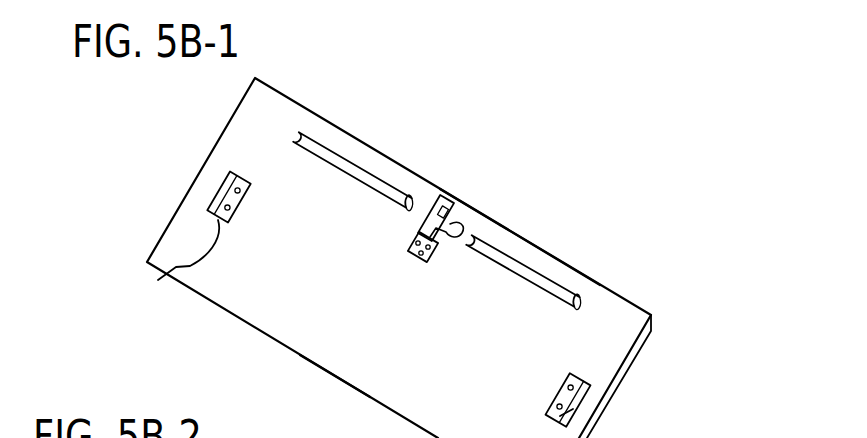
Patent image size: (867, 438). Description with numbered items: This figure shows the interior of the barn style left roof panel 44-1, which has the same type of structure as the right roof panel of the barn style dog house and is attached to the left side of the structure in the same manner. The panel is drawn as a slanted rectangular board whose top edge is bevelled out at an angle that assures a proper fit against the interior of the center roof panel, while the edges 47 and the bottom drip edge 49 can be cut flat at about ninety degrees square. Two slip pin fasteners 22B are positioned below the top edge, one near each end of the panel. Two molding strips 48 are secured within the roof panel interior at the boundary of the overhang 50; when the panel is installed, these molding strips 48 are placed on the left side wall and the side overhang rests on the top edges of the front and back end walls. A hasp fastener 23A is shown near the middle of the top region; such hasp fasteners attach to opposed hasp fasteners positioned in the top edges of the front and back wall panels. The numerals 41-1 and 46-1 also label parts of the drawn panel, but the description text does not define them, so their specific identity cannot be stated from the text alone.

The door panel 41-1 is at (245, 322).
The lower edge of panel 46-1 is at (328, 369).
The left roof panel 44-1 is at (543, 247).
The bottom drip edge 49 is at (492, 213).
The hasp fastener 23A is at (537, 149).
The molding strip 48 is at (348, 163).
The overhang 50 is at (423, 190).
The edge 47 is at (181, 204).
The slip pin fastener 22B is at (167, 270).